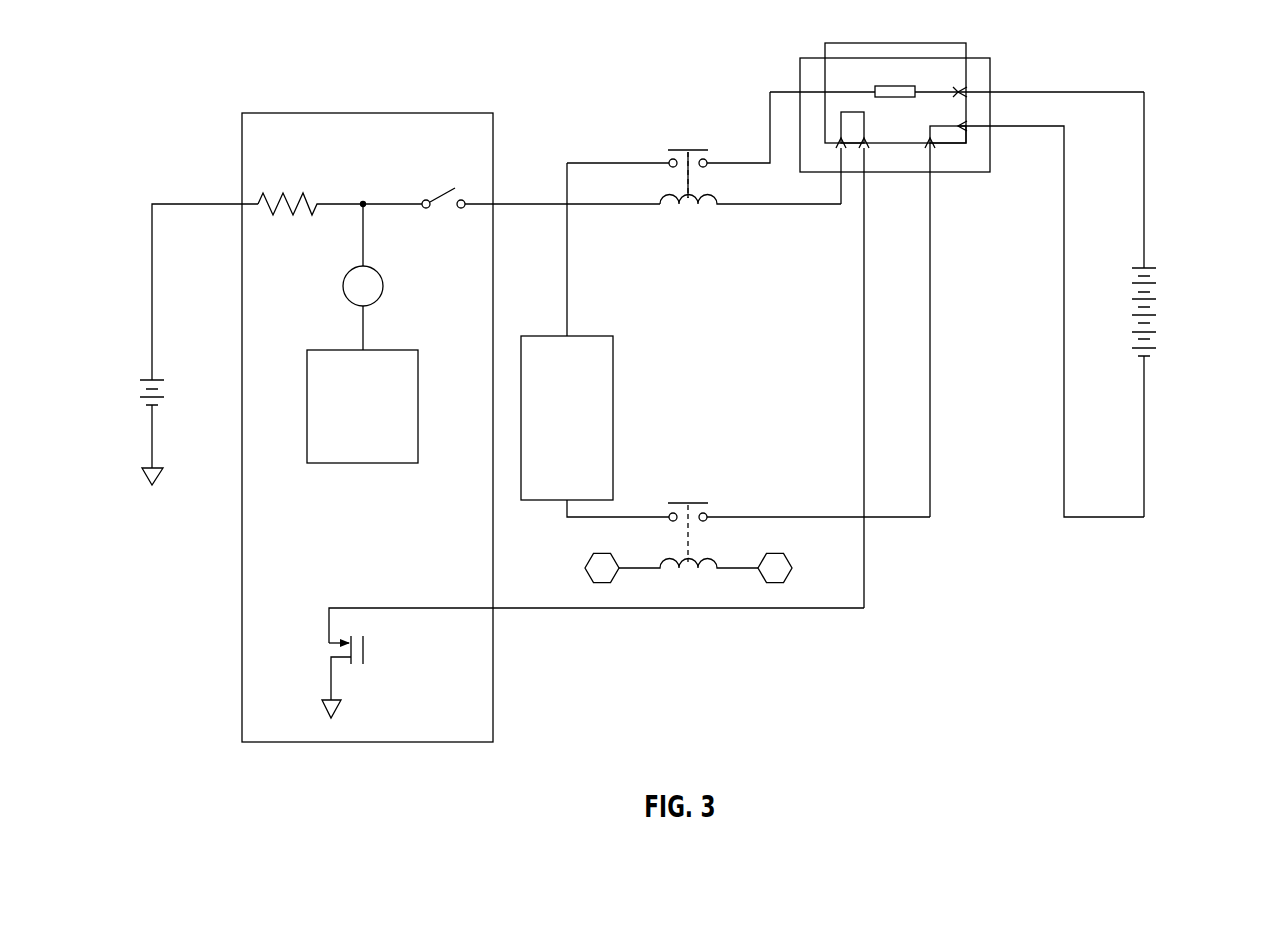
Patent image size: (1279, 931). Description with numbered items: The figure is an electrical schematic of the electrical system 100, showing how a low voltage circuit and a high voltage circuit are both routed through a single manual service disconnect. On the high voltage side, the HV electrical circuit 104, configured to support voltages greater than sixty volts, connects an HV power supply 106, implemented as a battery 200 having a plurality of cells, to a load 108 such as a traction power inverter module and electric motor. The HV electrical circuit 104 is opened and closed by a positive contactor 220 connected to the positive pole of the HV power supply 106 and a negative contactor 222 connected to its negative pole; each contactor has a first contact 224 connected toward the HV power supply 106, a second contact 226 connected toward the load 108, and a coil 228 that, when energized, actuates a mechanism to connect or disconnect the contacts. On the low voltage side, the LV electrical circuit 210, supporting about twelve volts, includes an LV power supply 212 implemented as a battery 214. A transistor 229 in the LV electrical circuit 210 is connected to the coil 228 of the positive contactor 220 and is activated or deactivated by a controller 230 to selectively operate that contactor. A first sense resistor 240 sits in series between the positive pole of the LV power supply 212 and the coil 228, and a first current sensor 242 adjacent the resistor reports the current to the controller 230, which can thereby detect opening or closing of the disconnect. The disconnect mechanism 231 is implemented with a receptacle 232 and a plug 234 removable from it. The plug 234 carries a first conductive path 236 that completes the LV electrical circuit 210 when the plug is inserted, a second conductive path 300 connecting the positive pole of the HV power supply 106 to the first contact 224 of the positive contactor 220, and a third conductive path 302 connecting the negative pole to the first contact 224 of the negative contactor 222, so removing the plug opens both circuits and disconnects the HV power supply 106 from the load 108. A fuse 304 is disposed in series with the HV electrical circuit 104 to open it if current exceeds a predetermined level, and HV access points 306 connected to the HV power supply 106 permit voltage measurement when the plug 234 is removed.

The electrical system 100 is at (548, 657).
The HV electrical circuit 104 is at (770, 110).
The HV power supply 106 is at (1190, 304).
The load 108 is at (613, 418).
The battery 200 is at (1148, 266).
The LV electrical circuit 210 is at (152, 242).
The LV power supply 212 is at (117, 402).
The battery 214 is at (152, 378).
The positive contactor 220 is at (704, 348).
The negative contactor 222 is at (692, 495).
The first contact 224 is at (708, 167).
The second contact 226 is at (668, 167).
The coil 228 is at (703, 200).
The transistor 229 is at (365, 660).
The controller 230 is at (378, 350).
The disconnect mechanism 231 is at (946, 304).
The receptacle 232 is at (809, 58).
The plug 234 is at (879, 43).
The first conductive path 236 is at (864, 128).
The first sense resistor 240 is at (290, 194).
The first current sensor 242 is at (383, 286).
The second conductive path 300 is at (930, 91).
The third conductive path 302 is at (947, 128).
The fuse 304 is at (897, 86).
The HV access point 306 is at (970, 90).